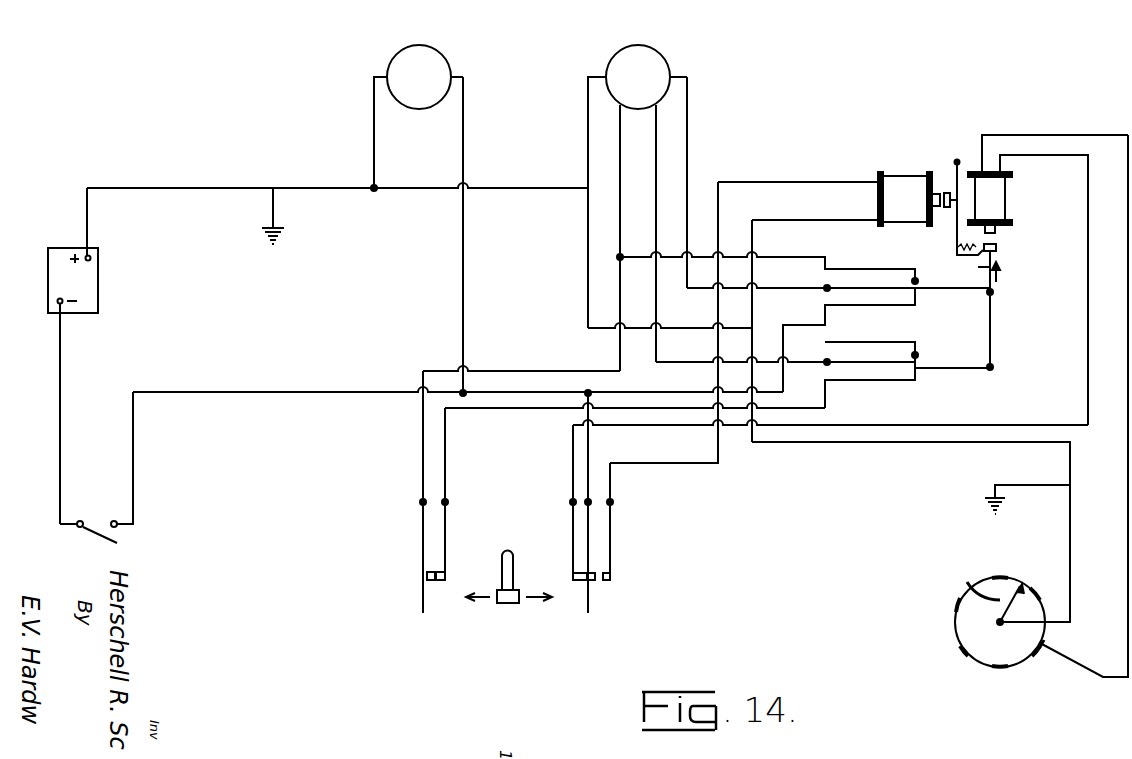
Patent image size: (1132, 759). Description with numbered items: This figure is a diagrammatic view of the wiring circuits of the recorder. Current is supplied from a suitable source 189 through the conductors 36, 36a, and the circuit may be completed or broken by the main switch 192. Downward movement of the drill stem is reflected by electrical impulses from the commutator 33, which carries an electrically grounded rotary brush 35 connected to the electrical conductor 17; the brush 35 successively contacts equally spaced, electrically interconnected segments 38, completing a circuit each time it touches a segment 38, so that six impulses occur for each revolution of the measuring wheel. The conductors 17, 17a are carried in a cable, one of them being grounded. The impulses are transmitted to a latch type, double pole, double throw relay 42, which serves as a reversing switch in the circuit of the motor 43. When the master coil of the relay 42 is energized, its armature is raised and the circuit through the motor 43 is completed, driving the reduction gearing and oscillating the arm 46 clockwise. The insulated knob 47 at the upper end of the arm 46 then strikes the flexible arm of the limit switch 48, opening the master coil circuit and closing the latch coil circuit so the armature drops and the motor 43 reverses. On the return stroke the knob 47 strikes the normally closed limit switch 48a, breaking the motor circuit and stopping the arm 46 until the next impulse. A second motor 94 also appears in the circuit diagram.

The conductor 36 is at (178, 188).
The conductor 36a is at (466, 170).
The motor 94 is at (388, 60).
The motor 43 is at (675, 58).
The latch type, double pole, double throw relay 42 is at (955, 163).
The source of current 189 is at (103, 356).
The main switch 192 is at (96, 520).
The limit switch 48a is at (408, 576).
The single pole, double throw limit switch 48 is at (616, 584).
The knob 47 is at (520, 564).
The arm 46 is at (508, 608).
The electrical conductor 17 is at (1066, 525).
The electrical conductor 17a is at (1128, 542).
The segments 38 is at (963, 644).
The rotary brush 35 is at (968, 581).
The commutator 33 is at (1042, 656).